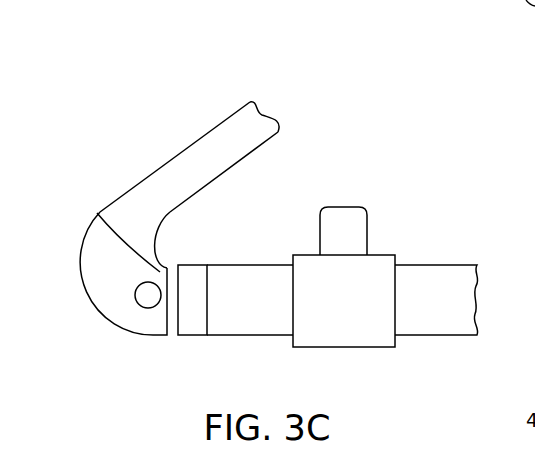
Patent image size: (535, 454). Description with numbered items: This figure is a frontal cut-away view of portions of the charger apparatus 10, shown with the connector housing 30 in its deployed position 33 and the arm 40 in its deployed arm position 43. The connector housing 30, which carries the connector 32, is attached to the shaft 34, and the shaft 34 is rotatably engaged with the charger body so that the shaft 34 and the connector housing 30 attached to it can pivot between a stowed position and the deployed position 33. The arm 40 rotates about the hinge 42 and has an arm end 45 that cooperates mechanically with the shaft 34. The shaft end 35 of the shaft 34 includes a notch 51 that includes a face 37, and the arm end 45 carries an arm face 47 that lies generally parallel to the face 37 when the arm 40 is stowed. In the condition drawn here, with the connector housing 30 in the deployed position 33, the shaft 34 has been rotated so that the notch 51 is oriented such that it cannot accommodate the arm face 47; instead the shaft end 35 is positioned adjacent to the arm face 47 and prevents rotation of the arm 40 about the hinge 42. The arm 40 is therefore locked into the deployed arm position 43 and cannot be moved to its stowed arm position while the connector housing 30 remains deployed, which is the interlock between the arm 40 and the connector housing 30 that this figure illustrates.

The charger apparatus 10 is at (128, 53).
The connector housing 30 is at (375, 262).
The connector 32 is at (343, 207).
The deployed position 33 is at (384, 278).
The shaft 34 is at (438, 328).
The shaft end 35 is at (176, 320).
The face 37 is at (195, 327).
The arm 40 is at (177, 175).
The hinge 42 is at (147, 295).
The deployed arm position 43 is at (217, 147).
The arm end 45 is at (98, 214).
The arm face 47 is at (176, 268).
The notch 51 is at (195, 272).